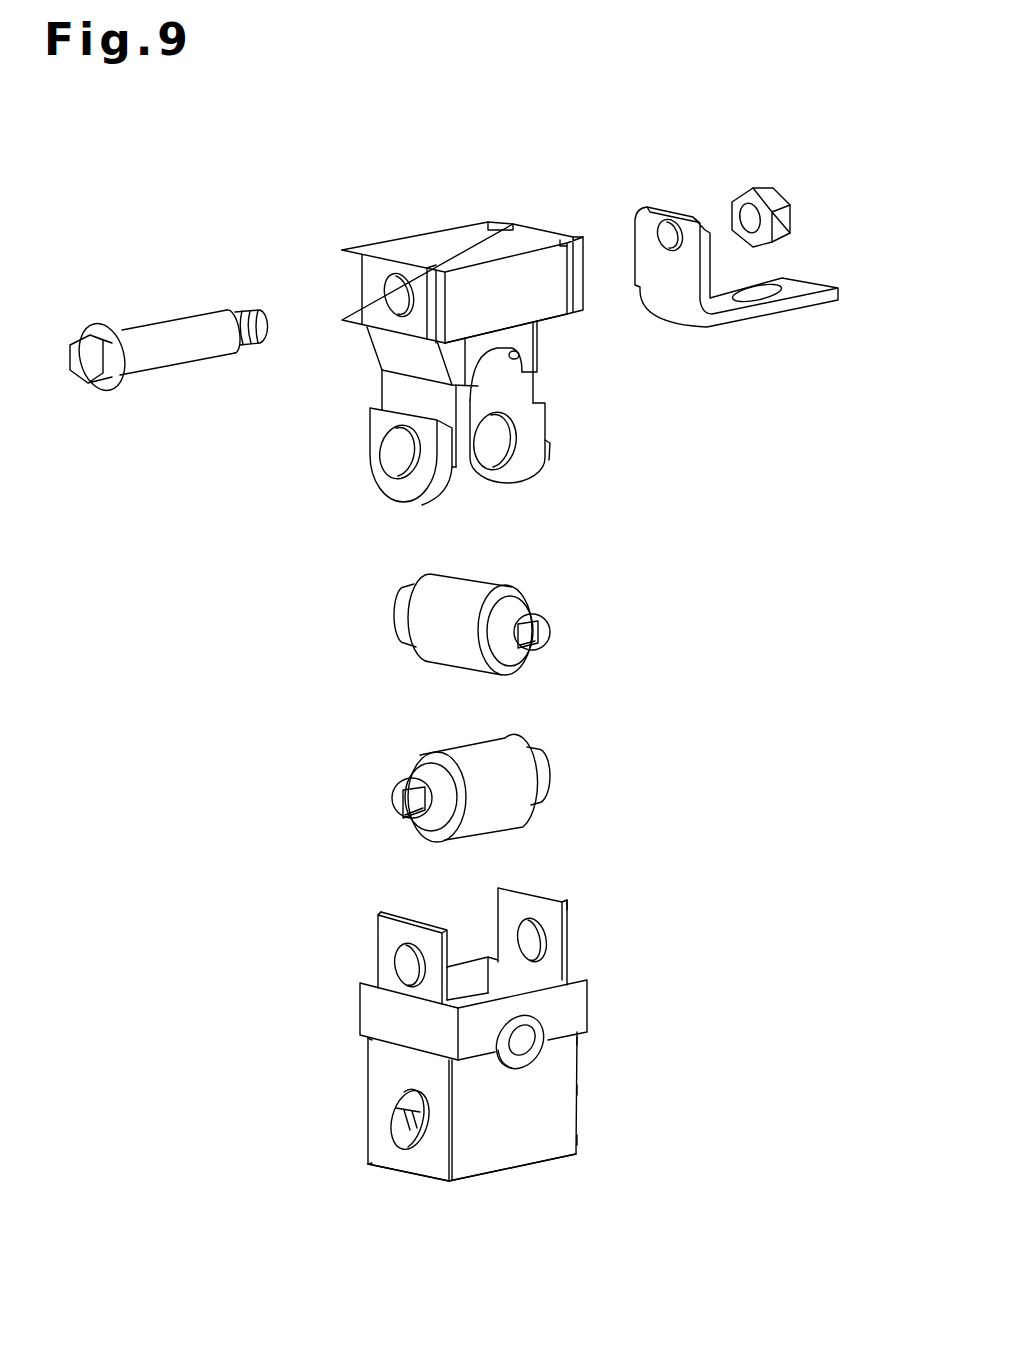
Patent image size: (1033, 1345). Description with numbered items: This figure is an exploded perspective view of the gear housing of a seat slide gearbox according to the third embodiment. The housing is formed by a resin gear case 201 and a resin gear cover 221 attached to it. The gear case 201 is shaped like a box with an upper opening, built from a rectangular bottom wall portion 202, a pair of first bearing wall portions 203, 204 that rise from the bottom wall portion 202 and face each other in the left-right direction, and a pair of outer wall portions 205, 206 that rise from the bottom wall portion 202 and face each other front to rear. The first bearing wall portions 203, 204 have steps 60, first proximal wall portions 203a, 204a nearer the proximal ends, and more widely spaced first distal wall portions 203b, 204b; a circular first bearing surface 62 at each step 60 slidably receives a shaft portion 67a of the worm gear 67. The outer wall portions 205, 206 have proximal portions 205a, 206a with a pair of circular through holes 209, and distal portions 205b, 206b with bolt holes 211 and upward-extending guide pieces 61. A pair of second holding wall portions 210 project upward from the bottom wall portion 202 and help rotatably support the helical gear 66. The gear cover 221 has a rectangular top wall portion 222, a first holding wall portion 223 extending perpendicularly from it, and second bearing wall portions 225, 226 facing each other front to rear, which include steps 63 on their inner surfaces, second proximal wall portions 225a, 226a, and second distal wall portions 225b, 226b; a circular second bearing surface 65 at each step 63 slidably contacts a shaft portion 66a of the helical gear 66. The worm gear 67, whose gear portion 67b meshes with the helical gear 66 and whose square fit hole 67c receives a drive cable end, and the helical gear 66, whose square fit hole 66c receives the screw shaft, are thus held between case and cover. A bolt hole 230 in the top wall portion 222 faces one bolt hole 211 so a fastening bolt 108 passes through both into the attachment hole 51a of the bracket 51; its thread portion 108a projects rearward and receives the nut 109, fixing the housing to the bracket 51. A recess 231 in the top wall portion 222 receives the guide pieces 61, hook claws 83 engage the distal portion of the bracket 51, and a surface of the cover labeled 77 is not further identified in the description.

The fastening bolt 108 is at (150, 325).
The thread portion 108a is at (241, 306).
The gear cover 221 is at (455, 221).
The top wall portion 222 is at (380, 238).
The bolt hole 230 is at (385, 292).
The recess 231 is at (378, 256).
The hook claws 83 is at (515, 230).
The front surface of block 77 is at (506, 345).
The first holding wall portion 223 is at (538, 343).
The second bearing wall portion 225 is at (398, 505).
The second proximal wall portion 225a is at (380, 385).
The second distal wall portion 225b is at (372, 470).
The second bearing wall portion 226 is at (530, 470).
The second proximal wall portion 226a is at (528, 388).
The second distal wall portion 226b is at (540, 460).
The second bearing surface 65 is at (386, 445).
The step 63 is at (540, 446).
The nut 109 is at (757, 188).
The bracket 51 is at (810, 292).
The attachment hole 51a is at (668, 228).
The worm gear 67 is at (548, 627).
The shaft portion 67a is at (520, 601).
The gear portion 67b is at (460, 572).
The fit hole 67c is at (532, 648).
The helical gear 66 is at (545, 780).
The shaft portion 66a is at (416, 765).
The fit hole 66c is at (457, 750).
The gear case 201 is at (702, 1030).
The bolt hole 211 is at (527, 912).
The guide piece 61 is at (380, 922).
The first distal wall portion 204b is at (460, 955).
The distal portion 205b is at (360, 1008).
The distal portion 206b is at (570, 961).
The first distal wall portion 203b is at (588, 989).
The outer wall portion 205 is at (368, 1141).
The proximal portion 205a is at (376, 1162).
The first bearing wall portion 204 is at (372, 1060).
The first proximal wall portion 204a is at (370, 1108).
The second holding wall portion 210 is at (430, 1126).
The through hole 209 is at (404, 1149).
The first bearing wall portion 203 is at (553, 1154).
The first proximal wall portion 203a is at (575, 1085).
The outer wall portion 206 is at (581, 1051).
The proximal portion 206a is at (579, 1138).
The bottom wall portion 202 is at (471, 1180).
The step 60 is at (537, 1058).
The first bearing surface 62 is at (495, 1062).